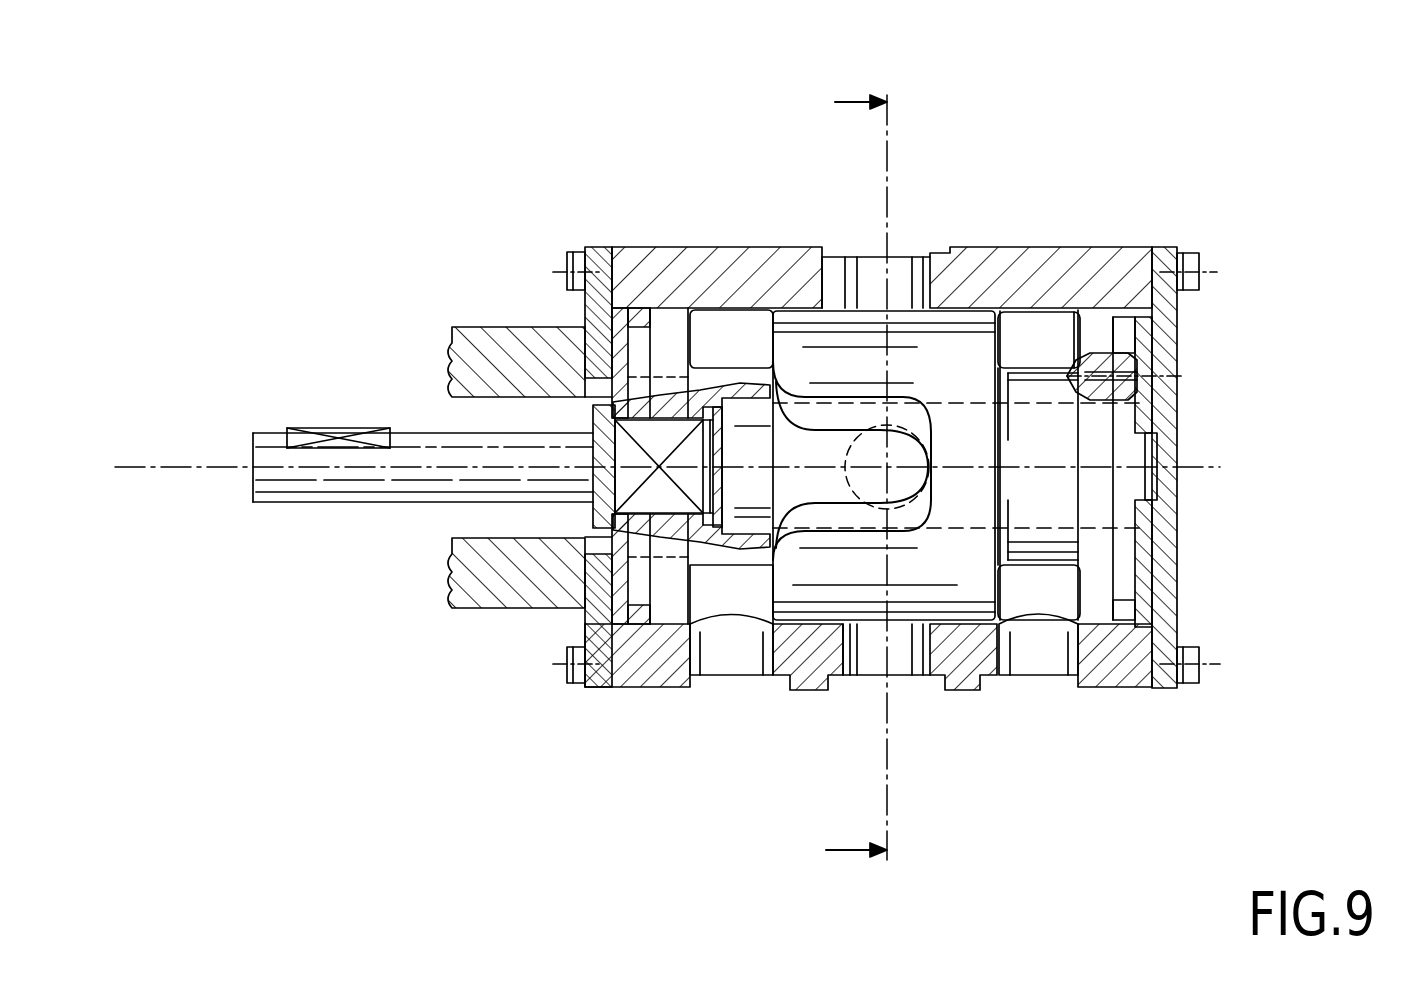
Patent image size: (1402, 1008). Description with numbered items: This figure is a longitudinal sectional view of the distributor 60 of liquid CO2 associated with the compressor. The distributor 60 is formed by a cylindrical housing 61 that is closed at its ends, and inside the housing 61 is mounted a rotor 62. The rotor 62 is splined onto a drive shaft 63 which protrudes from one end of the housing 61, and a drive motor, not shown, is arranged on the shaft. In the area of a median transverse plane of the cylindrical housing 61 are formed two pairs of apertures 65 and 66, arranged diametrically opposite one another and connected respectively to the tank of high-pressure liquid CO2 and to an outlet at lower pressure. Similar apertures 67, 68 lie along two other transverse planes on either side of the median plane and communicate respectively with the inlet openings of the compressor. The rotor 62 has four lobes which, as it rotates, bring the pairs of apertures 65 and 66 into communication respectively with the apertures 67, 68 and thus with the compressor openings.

The distributor 60 is at (448, 743).
The cylindrical housing 61 is at (717, 272).
The rotor 62 is at (972, 345).
The drive shaft 63 is at (398, 474).
The apertures 65 is at (915, 250).
The apertures 66 is at (915, 457).
The apertures 67 is at (733, 648).
The apertures 68 is at (1045, 657).